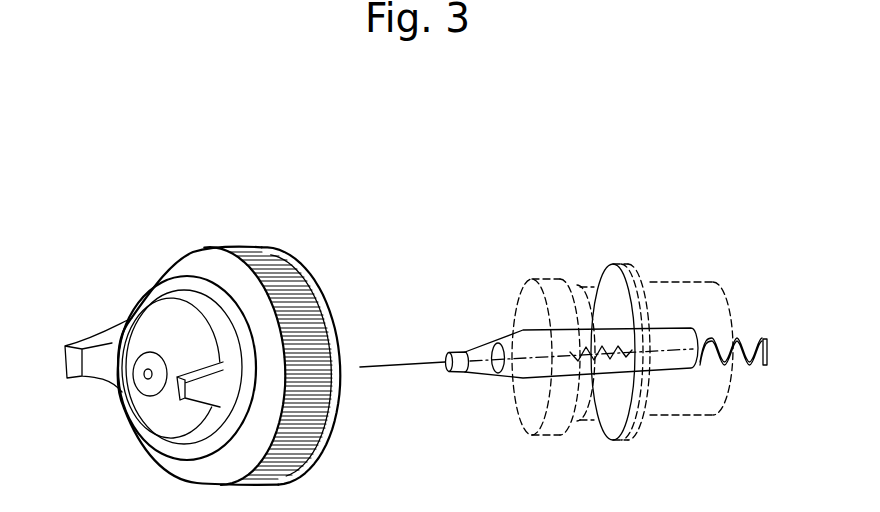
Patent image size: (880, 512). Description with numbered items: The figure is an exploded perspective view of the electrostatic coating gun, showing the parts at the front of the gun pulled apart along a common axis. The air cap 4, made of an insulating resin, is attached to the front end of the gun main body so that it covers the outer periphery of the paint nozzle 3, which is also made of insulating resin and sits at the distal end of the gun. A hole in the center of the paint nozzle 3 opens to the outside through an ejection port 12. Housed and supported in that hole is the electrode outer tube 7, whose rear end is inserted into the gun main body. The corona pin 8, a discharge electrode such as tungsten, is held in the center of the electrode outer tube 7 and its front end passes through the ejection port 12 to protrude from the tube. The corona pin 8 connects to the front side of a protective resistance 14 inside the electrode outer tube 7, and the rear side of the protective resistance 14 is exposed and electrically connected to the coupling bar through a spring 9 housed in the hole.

The paint nozzle 3 is at (618, 265).
The air cap 4 is at (192, 253).
The electrode outer tube 7 is at (598, 388).
The corona pin 8 is at (402, 363).
The spring 9 is at (745, 337).
The ejection port 12 is at (147, 376).
The protective resistance 14 is at (595, 355).